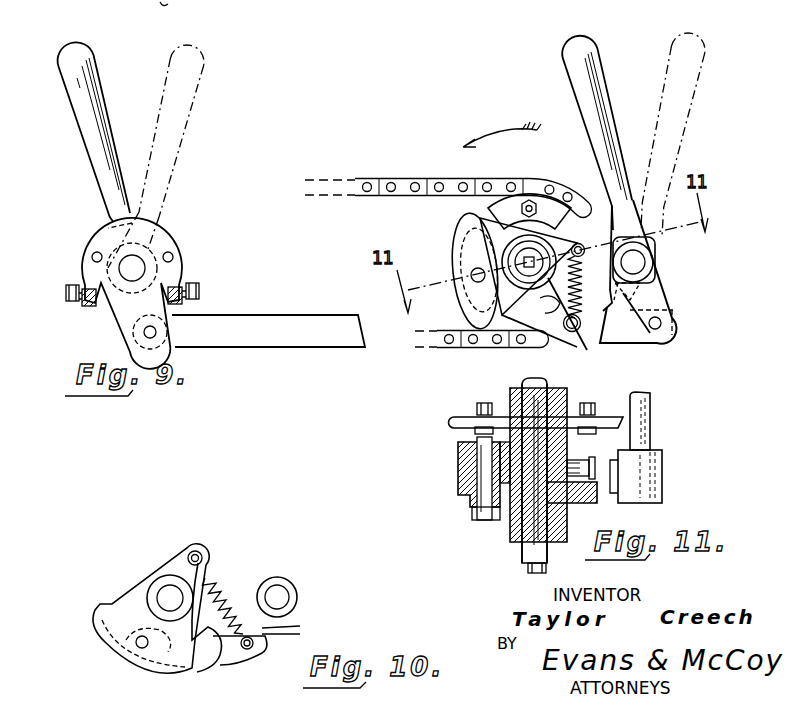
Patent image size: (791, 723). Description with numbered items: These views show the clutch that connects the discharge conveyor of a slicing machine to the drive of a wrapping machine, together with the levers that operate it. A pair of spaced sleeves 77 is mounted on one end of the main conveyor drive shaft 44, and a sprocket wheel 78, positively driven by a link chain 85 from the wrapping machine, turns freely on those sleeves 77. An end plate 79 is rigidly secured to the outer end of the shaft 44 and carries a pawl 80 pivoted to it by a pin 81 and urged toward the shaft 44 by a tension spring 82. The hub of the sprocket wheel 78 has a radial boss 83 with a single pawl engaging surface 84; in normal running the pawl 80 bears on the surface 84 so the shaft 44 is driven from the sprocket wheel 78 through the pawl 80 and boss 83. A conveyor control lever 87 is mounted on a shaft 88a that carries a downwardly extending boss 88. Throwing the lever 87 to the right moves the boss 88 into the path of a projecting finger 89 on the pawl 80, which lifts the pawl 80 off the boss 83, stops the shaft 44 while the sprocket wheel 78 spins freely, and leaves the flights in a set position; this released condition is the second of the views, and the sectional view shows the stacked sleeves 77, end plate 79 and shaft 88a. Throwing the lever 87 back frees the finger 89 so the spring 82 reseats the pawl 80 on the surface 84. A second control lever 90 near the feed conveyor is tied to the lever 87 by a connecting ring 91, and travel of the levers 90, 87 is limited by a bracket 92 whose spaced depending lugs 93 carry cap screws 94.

In FIG. 11, the main conveyor drive shaft 44 is at (525, 550).
In FIG. 11, the spaced sleeves 77 is at (510, 385).
In FIG. 9, the sprocket wheel 78 is at (521, 198).
In FIG. 11, the sprocket wheel 78 is at (603, 416).
In FIG. 9, the end plate 79 is at (470, 240).
In FIG. 11, the end plate 79 is at (572, 502).
In FIG. 9, the pawl 80 is at (143, 18).
In FIG. 10, the pawl 80 is at (208, 660).
In FIG. 11, the pawl 80 is at (462, 472).
In FIG. 9, the pin 81 is at (473, 270).
In FIG. 11, the pin 81 is at (480, 520).
In FIG. 9, the tension spring 82 is at (580, 246).
In FIG. 10, the tension spring 82 is at (206, 567).
In FIG. 9, the radial boss 83 is at (470, 308).
In FIG. 10, the radial boss 83 is at (247, 636).
In FIG. 10, the pawl engaging surface 84 is at (226, 588).
In FIG. 9, the link chain 85 is at (402, 179).
In FIG. 9, the conveyor control lever 87 is at (577, 92).
In FIG. 9, the boss 88 is at (640, 297).
In FIG. 10, the boss 88 is at (300, 626).
In FIG. 11, the boss 88 is at (665, 480).
In FIG. 9, the shaft 88a is at (643, 262).
In FIG. 10, the shaft 88a is at (283, 596).
In FIG. 11, the shaft 88a is at (652, 420).
In FIG. 9, the projecting finger 89 is at (600, 342).
In FIG. 10, the projecting finger 89 is at (235, 656).
In FIG. 9, the second control lever 90 is at (100, 118).
In FIG. 9, the connecting ring 91 is at (285, 316).
In FIG. 9, the bracket 92 is at (172, 244).
In FIG. 9, the depending lugs 93 is at (85, 312).
In FIG. 9, the cap screws 94 is at (68, 290).